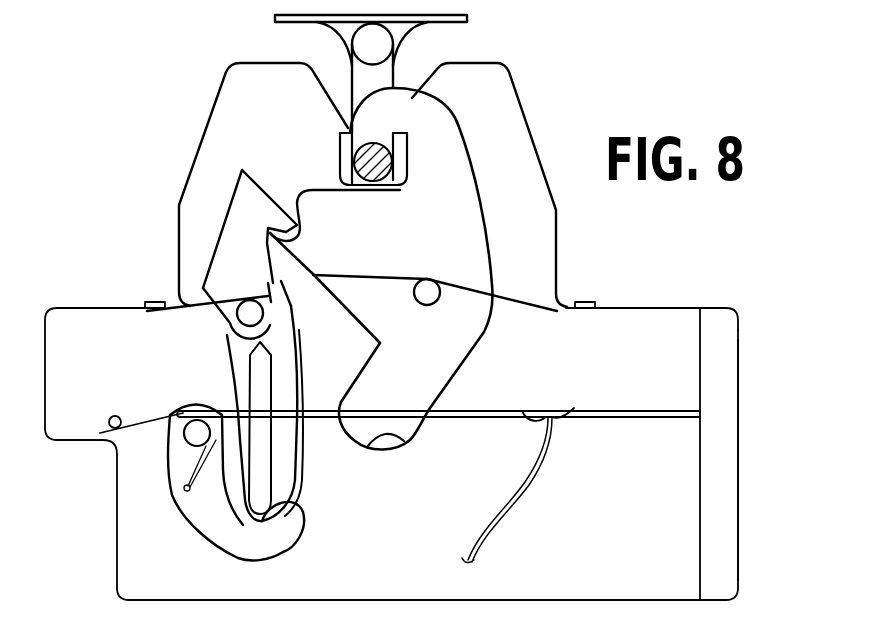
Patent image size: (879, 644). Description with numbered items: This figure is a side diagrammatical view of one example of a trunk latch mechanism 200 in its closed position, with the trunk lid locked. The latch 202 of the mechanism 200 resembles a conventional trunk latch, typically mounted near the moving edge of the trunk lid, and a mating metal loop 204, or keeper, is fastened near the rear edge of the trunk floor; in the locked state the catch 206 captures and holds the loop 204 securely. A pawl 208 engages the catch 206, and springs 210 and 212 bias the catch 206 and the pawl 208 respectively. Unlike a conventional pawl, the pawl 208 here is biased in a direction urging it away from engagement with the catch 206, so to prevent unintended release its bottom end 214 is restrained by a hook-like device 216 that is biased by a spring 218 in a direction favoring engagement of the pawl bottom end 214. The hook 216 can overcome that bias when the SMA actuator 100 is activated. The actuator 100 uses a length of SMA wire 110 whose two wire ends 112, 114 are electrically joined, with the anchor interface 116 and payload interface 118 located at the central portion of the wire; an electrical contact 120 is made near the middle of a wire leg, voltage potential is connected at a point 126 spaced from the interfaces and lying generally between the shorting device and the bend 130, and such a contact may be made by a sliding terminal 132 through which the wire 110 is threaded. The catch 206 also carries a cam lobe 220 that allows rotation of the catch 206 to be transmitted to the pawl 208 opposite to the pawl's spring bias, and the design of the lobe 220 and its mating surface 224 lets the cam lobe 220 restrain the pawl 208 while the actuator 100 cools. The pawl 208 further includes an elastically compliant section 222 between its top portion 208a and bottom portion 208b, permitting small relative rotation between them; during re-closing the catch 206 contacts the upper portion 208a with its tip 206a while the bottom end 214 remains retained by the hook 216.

The SMA actuator 100 is at (566, 368).
The SMA wire 110 is at (583, 417).
The SMA wire end 112 is at (700, 407).
The SMA wire end 114 is at (719, 319).
The anchor interface 116 is at (703, 413).
The payload interface 118 is at (148, 412).
The electrical contact 120 is at (509, 494).
The voltage connection point 126 is at (556, 410).
The bend 130 is at (168, 407).
The sliding terminal 132 is at (525, 410).
The trunk latch mechanism 200 is at (567, 100).
The latch 202 is at (562, 228).
The loop 204 is at (378, 120).
The catch 206 is at (438, 173).
The tip 206a is at (305, 237).
The pawl 208 is at (214, 257).
The top portion 208a is at (243, 160).
The bottom portion 208b is at (285, 335).
The spring 210 is at (522, 298).
The spring 212 is at (188, 303).
The bottom end 214 is at (283, 548).
The hook-like device 216 is at (162, 532).
The spring 218 is at (141, 420).
The cam lobe 220 is at (405, 442).
The elastically compliant section 222 is at (262, 474).
The mating surface 224 is at (300, 480).